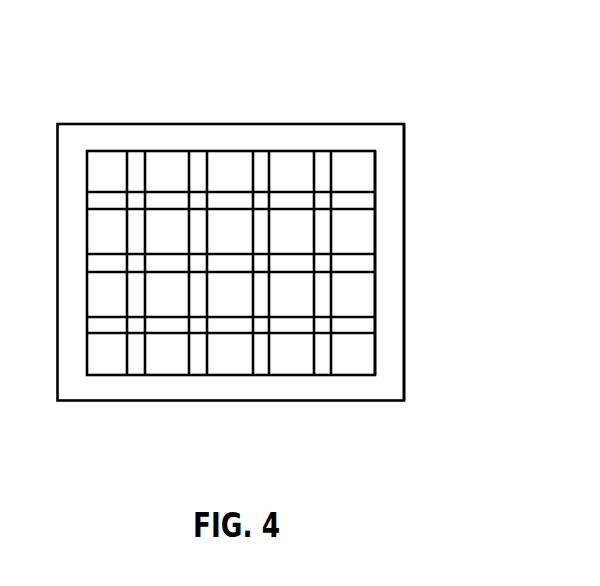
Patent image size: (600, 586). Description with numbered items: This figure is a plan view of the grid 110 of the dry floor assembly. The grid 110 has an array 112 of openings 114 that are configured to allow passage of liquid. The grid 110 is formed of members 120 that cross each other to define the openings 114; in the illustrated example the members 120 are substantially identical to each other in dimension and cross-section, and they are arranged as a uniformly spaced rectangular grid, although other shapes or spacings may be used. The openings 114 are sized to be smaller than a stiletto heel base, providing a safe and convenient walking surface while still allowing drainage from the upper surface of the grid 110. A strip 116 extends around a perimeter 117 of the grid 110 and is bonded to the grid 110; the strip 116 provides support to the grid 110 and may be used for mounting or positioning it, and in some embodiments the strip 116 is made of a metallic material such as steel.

The grid 110 is at (333, 151).
The array 112 is at (390, 231).
The openings 114 is at (163, 222).
The strip 116 is at (394, 193).
The perimeter 117 is at (366, 135).
The members 120 is at (112, 190).